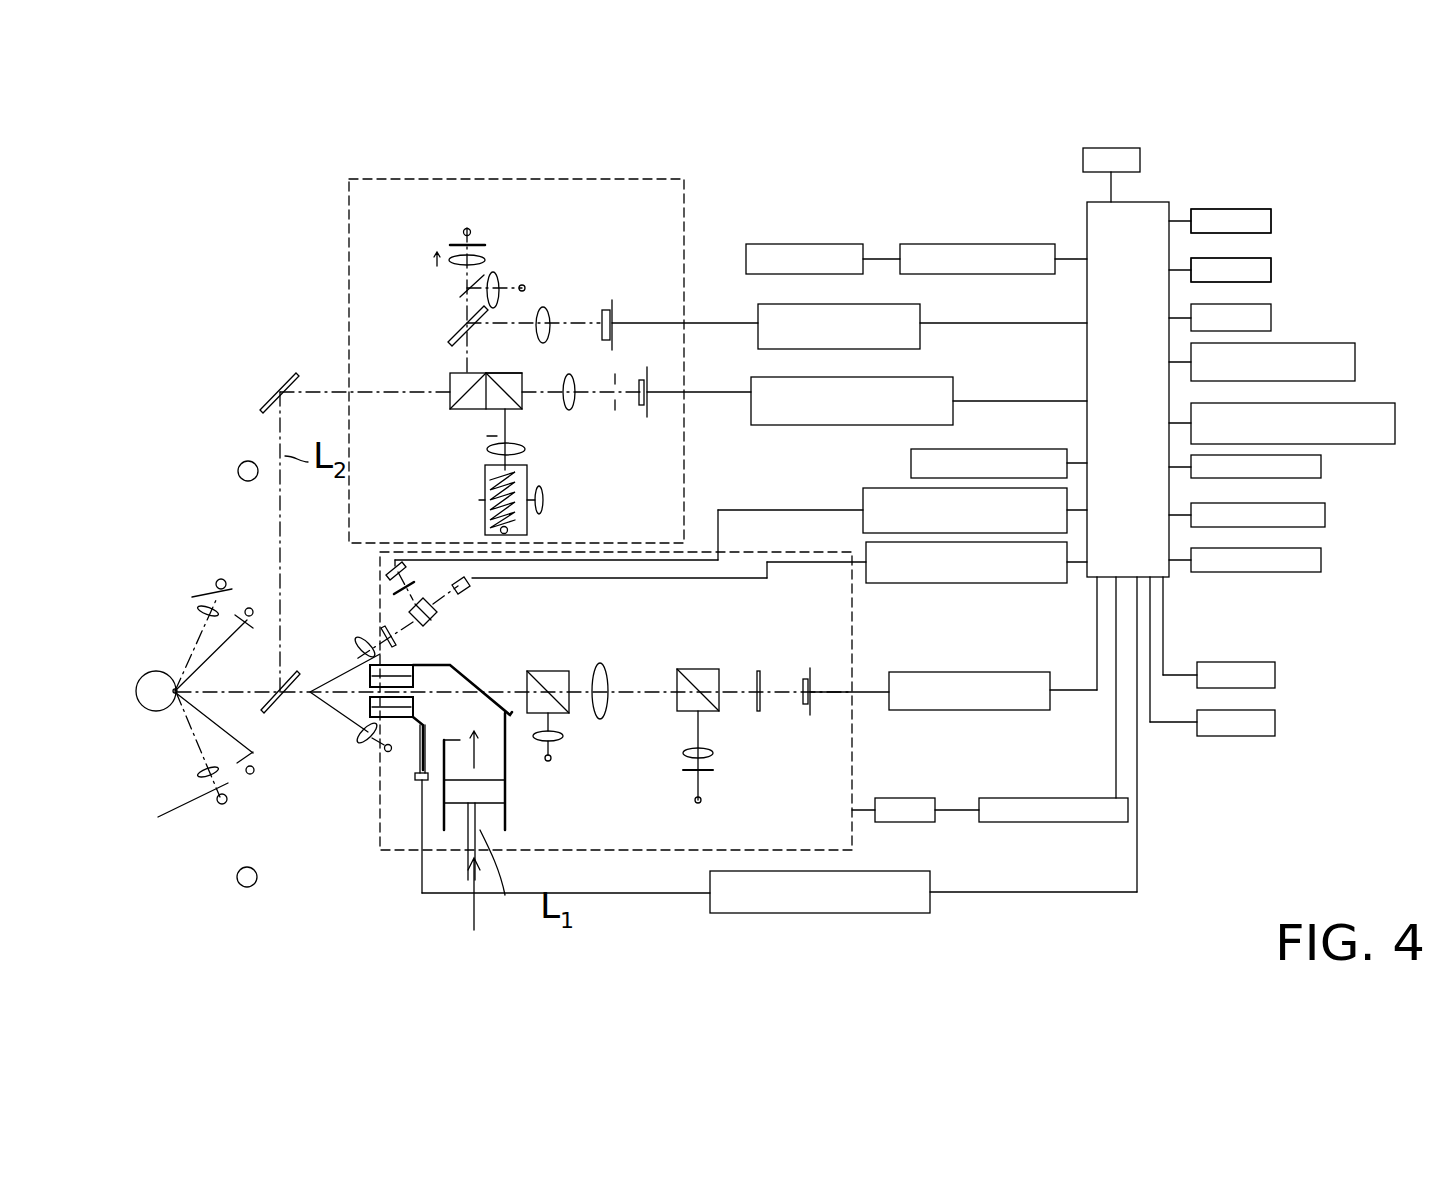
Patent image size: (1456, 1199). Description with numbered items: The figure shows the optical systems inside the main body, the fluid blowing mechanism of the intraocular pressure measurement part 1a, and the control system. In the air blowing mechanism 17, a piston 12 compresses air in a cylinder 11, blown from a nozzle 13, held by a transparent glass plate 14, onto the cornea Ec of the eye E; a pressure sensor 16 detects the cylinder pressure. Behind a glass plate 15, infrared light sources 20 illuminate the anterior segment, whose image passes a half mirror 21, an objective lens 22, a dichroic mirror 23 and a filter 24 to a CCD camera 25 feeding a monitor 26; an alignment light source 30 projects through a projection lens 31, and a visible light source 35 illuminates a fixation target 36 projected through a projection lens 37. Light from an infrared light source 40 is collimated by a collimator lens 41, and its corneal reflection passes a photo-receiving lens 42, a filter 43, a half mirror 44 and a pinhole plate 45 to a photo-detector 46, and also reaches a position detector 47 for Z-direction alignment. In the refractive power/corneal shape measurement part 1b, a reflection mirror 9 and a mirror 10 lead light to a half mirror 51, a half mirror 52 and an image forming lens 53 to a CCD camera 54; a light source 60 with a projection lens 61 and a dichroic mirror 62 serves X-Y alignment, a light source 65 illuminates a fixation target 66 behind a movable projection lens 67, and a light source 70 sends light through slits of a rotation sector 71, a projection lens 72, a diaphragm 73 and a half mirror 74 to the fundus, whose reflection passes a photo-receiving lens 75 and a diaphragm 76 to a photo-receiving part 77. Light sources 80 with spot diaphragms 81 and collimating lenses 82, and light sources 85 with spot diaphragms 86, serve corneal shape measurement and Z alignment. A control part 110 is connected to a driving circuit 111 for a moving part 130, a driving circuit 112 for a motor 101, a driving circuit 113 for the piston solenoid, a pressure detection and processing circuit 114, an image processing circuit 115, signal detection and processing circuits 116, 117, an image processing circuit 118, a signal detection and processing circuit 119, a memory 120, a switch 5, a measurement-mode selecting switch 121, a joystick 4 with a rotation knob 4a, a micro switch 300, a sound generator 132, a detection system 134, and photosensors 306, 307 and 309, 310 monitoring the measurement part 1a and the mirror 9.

The intraocular pressure measurement part 1a is at (852, 838).
The eye refractive power/corneal shape measurement part 1b is at (505, 179).
The joystick 4 is at (1321, 467).
The rotation knob 4a is at (1325, 515).
The switch 5 is at (1395, 424).
The reflection mirror 9 is at (271, 708).
The reflection mirror 10 is at (272, 386).
The cylinder 11 is at (465, 805).
The piston 12 is at (508, 793).
The nozzle 13 is at (410, 750).
The transparent glass plate 14 is at (380, 678).
The transparent glass plate 15 is at (510, 830).
The pressure sensor 16 is at (410, 780).
The air blowing mechanism 17 is at (474, 919).
The infrared light sources 20 is at (244, 461).
The half mirror 21 is at (553, 672).
The objective lens 22 is at (602, 666).
The dichroic mirror 23 is at (706, 668).
The filter 24 is at (760, 672).
The CCD camera 25 is at (810, 703).
The monitor 26 is at (1321, 560).
The infrared light source 30 is at (552, 762).
The projection lens 31 is at (560, 738).
The visible light source 35 is at (702, 803).
The fixation target 36 is at (713, 770).
The projection lens 37 is at (708, 750).
The infrared light source 40 is at (384, 750).
The collimator lens 41 is at (360, 736).
The photo-receiving lens 42 is at (358, 648).
The filter 43 is at (378, 625).
The half mirror 44 is at (434, 616).
The pinhole plate 45 is at (395, 590).
The photo-detector 46 is at (395, 560).
The one-dimensional position detector 47 is at (466, 588).
The half mirror 51 is at (452, 408).
The half mirror 52 is at (450, 340).
The image forming lens 53 is at (546, 314).
The CCD camera 54 is at (612, 310).
The infrared light source 60 is at (525, 285).
The projection lens 61 is at (495, 273).
The dichroic mirror 62 is at (460, 297).
The visible light source 65 is at (469, 228).
The fixation target 66 is at (452, 245).
The projection lens 67 is at (452, 262).
The infrared light source 70 is at (508, 530).
The rotation sector 71 is at (485, 508).
The projection lens 72 is at (520, 450).
The diaphragm 73 is at (487, 437).
The half mirror 74 is at (505, 373).
The photo-receiving lens 75 is at (572, 410).
The diaphragm 76 is at (615, 404).
The photo-receiving part 77 is at (648, 405).
The infrared light sources 80 is at (220, 578).
The spot diaphragms 81 is at (195, 585).
The collimating lenses 82 is at (200, 608).
The infrared light sources 85 is at (252, 607).
The spot diaphragms 86 is at (240, 610).
The motor 101 is at (918, 798).
The control part 110 is at (1160, 202).
The driving circuit 111 is at (955, 244).
The driving circuit 112 is at (1060, 798).
The driving circuit 113 is at (990, 449).
The pressure detection and processing circuit 114 is at (715, 913).
The image processing circuit 115 is at (978, 672).
The signal detection and processing circuit 116 is at (870, 488).
The signal detection and processing circuit 117 is at (955, 583).
The image processing circuit 118 is at (920, 322).
The signal detection and processing circuit 119 is at (915, 377).
The memory 120 is at (1271, 318).
The measurement-mode selecting switch 121 is at (1355, 355).
The moving part 130 is at (815, 244).
The sound generator 132 is at (1275, 670).
The detection system 134 is at (1275, 720).
The micro switch 300 is at (1083, 155).
The photosensor 306 is at (1271, 221).
The photosensor 307 is at (1231, 221).
The photosensor 309 is at (1271, 270).
The photosensor 310 is at (1231, 270).
The eye E is at (138, 698).
The cornea Ec is at (172, 682).